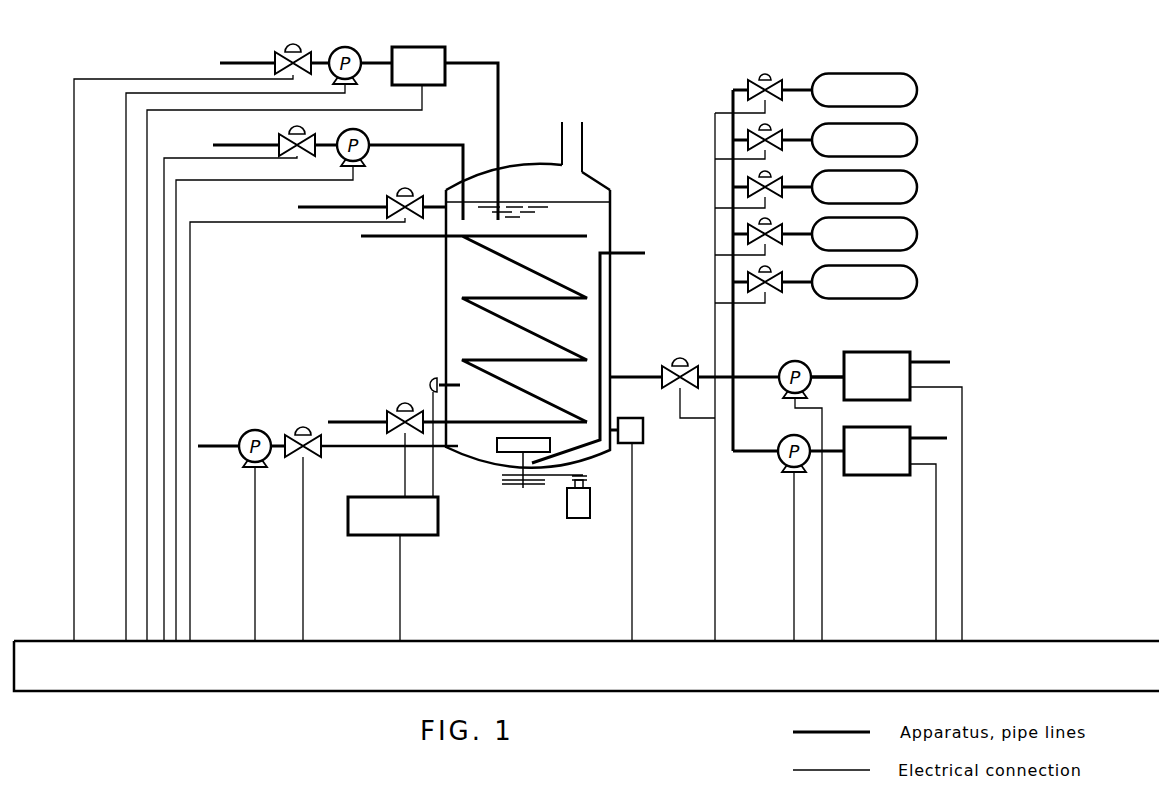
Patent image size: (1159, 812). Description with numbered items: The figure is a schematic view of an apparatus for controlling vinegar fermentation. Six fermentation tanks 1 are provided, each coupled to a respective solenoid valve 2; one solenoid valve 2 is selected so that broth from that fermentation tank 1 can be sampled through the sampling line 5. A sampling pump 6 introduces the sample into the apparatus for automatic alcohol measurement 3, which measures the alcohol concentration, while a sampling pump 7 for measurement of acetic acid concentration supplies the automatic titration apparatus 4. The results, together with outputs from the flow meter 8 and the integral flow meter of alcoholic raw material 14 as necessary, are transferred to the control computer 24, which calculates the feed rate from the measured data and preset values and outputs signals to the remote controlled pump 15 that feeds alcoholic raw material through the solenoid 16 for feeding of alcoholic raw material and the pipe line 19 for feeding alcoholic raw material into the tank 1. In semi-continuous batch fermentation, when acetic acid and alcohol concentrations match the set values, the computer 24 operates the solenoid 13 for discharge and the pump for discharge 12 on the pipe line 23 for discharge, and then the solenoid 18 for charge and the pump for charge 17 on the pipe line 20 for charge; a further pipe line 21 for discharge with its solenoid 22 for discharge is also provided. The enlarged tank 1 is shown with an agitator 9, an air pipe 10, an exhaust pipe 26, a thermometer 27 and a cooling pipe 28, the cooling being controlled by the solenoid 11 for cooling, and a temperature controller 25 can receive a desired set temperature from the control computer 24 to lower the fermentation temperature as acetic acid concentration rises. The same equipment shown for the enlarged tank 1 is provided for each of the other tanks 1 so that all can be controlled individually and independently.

The fermentation tank 1 is at (598, 178).
The solenoid valve 2 is at (771, 80).
The apparatus for automatic alcohol measurement 3 is at (877, 376).
The automatic titration apparatus 4 is at (877, 451).
The sampling line 5 is at (832, 380).
The sampling pump 6 is at (806, 364).
The sampling pump for measurement of acetic acid concentration 7 is at (780, 465).
The flow meter 8 is at (630, 430).
The agitator 9 is at (526, 486).
The air pipe 10 is at (623, 253).
The solenoid for cooling 11 is at (402, 408).
The pump for discharge 12 is at (261, 430).
The solenoid for discharge 13 is at (308, 428).
The integral flow meter of alcoholic raw material 14 is at (418, 66).
The remote controlled pump 15 is at (356, 48).
The solenoid for feeding of alcoholic raw material 16 is at (299, 45).
The pump for charge 17 is at (366, 132).
The solenoid for charge 18 is at (304, 128).
The pipe line for feeding alcoholic raw material 19 is at (490, 62).
The pipe line for charge 20 is at (430, 145).
The pipe line for discharge 21 is at (348, 206).
The solenoid for discharge 22 is at (411, 192).
The pipe line for discharge 23 is at (362, 449).
The control computer 24 is at (586, 666).
The temperature controller 25 is at (393, 516).
The exhaust pipe 26 is at (576, 122).
The thermometer 27 is at (430, 376).
The cooling pipe 28 is at (401, 238).